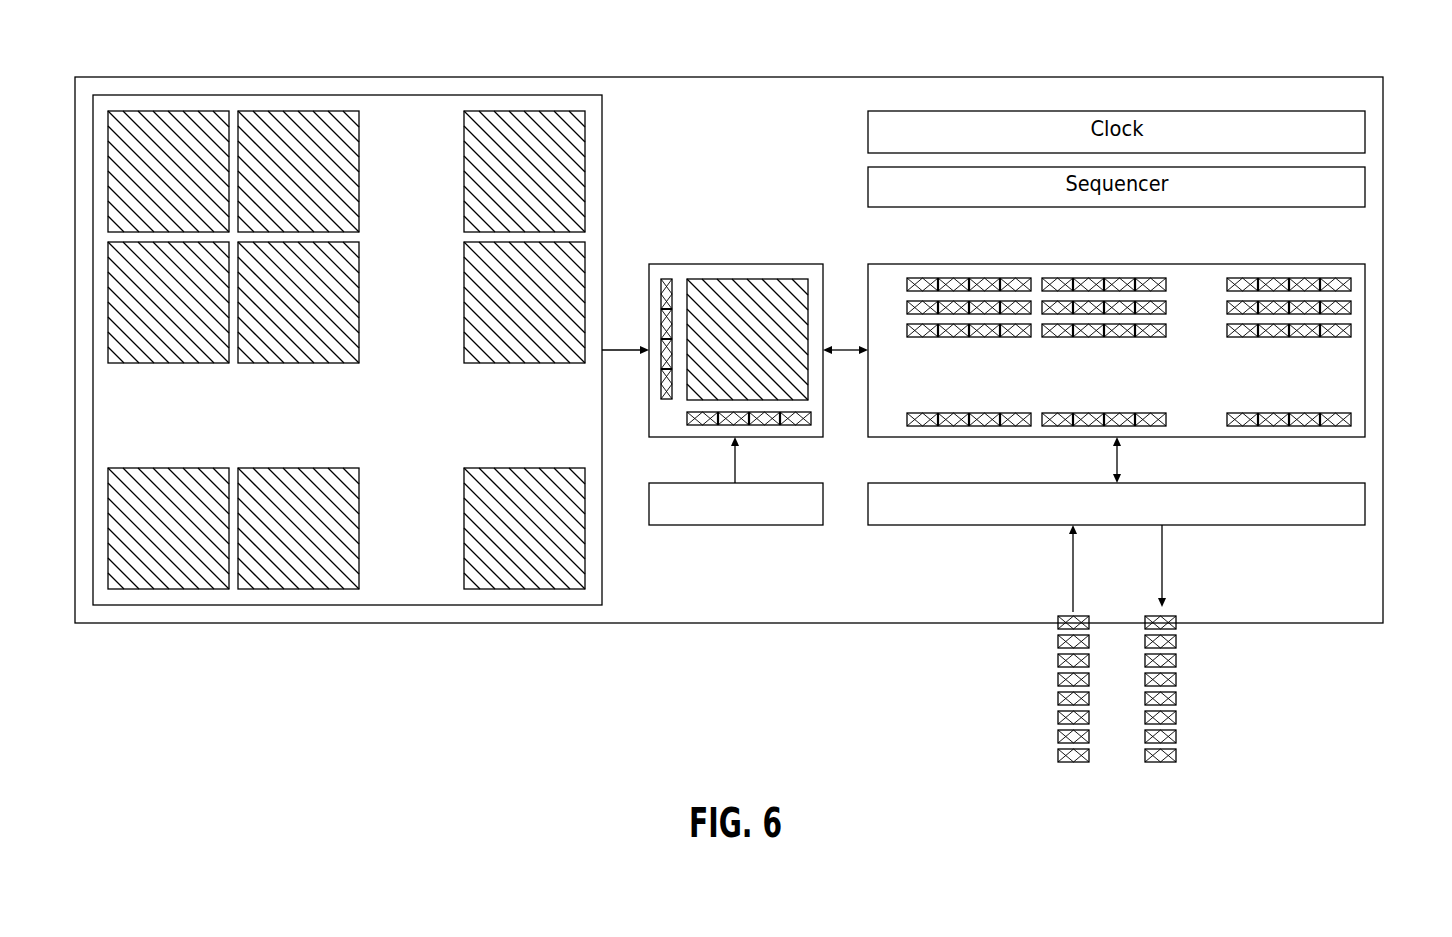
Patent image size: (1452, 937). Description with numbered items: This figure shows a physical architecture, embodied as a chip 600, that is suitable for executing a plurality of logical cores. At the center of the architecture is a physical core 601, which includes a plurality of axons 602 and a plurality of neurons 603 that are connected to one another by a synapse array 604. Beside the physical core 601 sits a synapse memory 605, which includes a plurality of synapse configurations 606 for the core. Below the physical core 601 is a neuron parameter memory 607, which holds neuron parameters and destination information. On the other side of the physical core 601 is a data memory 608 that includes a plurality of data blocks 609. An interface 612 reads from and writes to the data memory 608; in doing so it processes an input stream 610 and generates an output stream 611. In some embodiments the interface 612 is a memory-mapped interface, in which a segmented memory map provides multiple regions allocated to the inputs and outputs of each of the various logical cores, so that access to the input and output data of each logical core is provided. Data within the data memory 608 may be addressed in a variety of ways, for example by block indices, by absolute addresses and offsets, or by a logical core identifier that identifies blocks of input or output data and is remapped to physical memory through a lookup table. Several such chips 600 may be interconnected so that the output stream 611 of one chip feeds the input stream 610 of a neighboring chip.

The chip 600 is at (204, 77).
The physical core 601 is at (753, 344).
The axons 602 is at (667, 279).
The neurons 603 is at (797, 425).
The synapse array 604 is at (763, 297).
The synapse memory 605 is at (412, 95).
The synapse configurations 606 is at (578, 157).
The neuron parameter memory 607 is at (753, 527).
The data memory 608 is at (1157, 370).
The data blocks 609 is at (1338, 337).
The input stream 610 is at (1073, 764).
The output stream 611 is at (1160, 764).
The interface 612 is at (1268, 527).